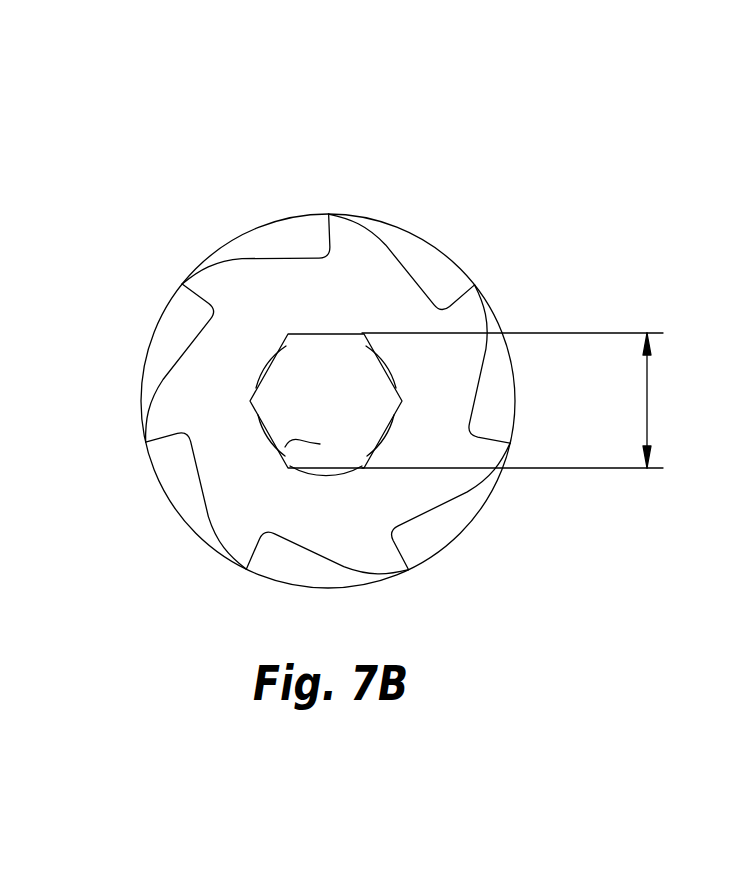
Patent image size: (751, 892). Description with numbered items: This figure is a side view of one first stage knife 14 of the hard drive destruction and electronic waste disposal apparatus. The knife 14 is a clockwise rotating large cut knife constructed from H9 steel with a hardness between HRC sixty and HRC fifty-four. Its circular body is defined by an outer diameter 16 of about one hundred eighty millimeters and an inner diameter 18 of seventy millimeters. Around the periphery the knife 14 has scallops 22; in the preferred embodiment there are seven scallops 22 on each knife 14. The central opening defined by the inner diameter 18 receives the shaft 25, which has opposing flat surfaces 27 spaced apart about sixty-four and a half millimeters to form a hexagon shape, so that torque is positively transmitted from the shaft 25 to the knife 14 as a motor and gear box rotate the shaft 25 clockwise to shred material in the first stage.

The large cut knife 14 is at (505, 287).
The outer diameter 16 is at (460, 252).
The inner diameter 18 is at (650, 397).
The scallops 22 is at (440, 509).
The shaft 25 is at (302, 443).
The opposing flat surfaces 27 is at (322, 333).